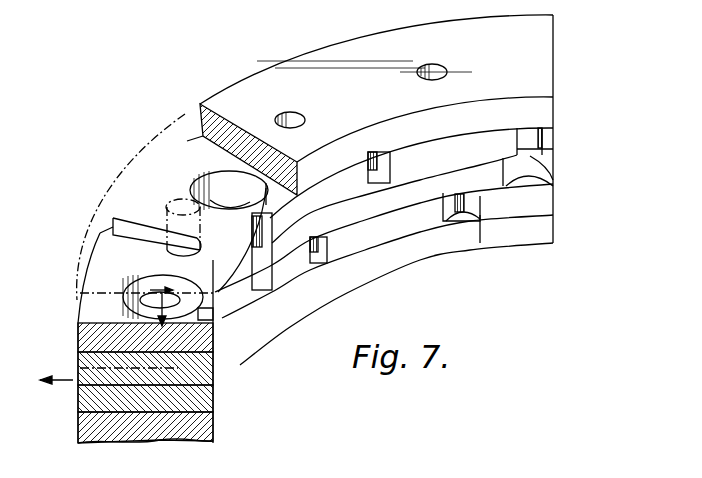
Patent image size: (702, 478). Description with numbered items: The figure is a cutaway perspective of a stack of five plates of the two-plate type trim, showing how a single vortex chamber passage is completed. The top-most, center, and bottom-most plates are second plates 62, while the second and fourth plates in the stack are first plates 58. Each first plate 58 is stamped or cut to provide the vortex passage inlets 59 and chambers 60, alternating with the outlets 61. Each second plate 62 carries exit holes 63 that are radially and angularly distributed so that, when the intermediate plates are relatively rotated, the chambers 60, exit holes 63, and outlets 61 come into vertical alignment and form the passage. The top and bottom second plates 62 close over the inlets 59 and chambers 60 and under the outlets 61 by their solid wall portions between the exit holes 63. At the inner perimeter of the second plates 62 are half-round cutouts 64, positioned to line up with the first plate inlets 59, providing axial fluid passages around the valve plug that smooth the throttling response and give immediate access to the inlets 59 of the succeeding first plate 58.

The first plate 58 is at (547, 137).
The vortex passage inlet 59 is at (327, 263).
The chamber 60 is at (223, 192).
The outlet 61 is at (127, 228).
The second plate 62 is at (530, 78).
The exit hole 63 is at (436, 65).
The cutout 64 is at (548, 170).